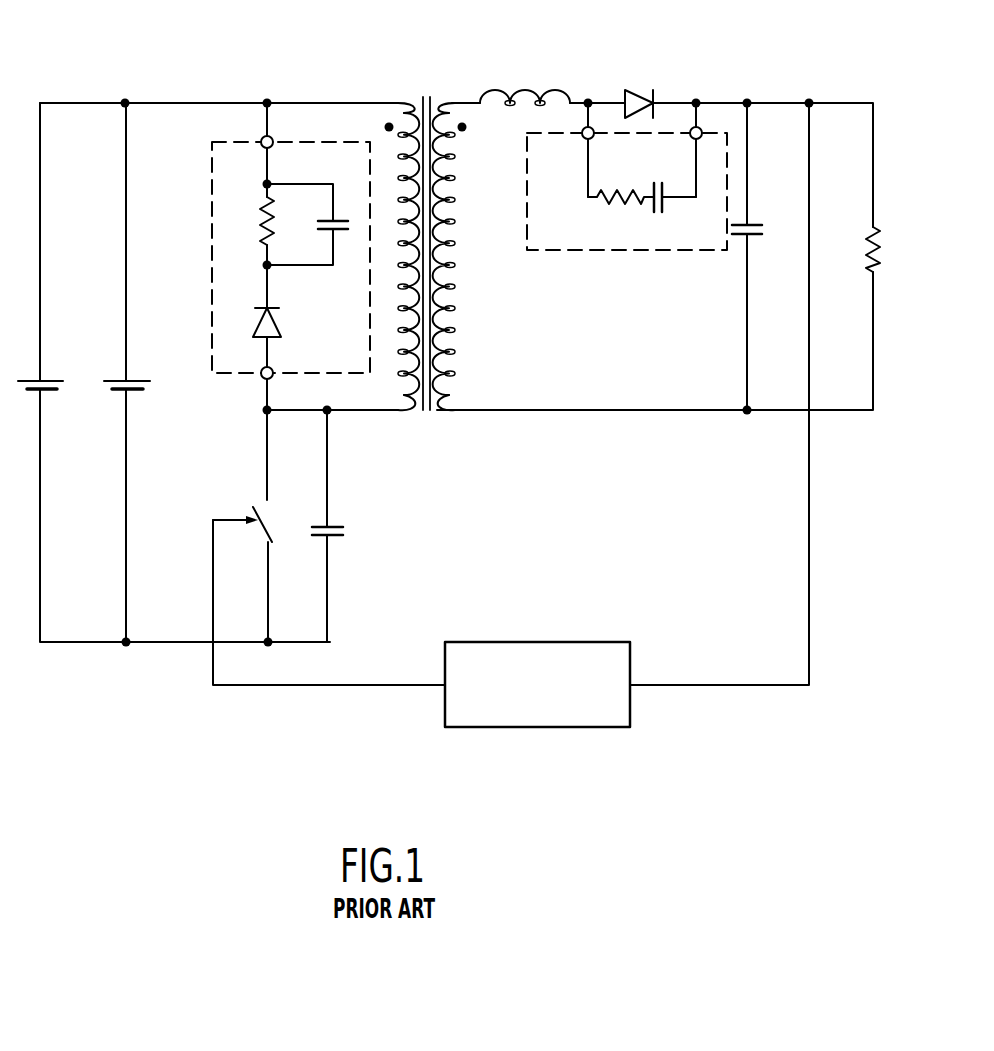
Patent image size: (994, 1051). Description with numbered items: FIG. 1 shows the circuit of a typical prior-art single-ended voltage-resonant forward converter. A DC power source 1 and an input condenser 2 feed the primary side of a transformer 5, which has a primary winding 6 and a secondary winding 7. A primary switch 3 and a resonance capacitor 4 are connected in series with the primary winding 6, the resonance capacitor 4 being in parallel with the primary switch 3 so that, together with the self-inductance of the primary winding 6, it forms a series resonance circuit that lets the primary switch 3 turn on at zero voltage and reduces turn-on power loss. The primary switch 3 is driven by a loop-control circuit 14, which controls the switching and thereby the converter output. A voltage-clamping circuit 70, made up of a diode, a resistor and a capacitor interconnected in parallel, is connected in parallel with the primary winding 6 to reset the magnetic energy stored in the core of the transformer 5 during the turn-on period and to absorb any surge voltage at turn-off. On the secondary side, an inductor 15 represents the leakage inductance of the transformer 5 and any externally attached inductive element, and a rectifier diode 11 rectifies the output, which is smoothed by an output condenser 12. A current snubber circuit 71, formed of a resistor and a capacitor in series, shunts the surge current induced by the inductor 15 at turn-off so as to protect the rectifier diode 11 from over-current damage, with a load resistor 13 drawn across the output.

The DC power source 1 is at (44, 380).
The input condenser 2 is at (128, 380).
The primary switch 3 is at (266, 505).
The resonance capacitor 4 is at (345, 532).
The transformer 5 is at (427, 98).
The primary winding 6 is at (400, 256).
The secondary winding 7 is at (452, 257).
The rectifier diode 11 is at (640, 96).
The output condenser 12 is at (748, 222).
The load resistor 13 is at (869, 226).
The loop-control circuit 14 is at (524, 641).
The inductor 15 is at (526, 87).
The voltage-clamping circuit 70 is at (222, 142).
The current snubber circuit 71 is at (623, 220).